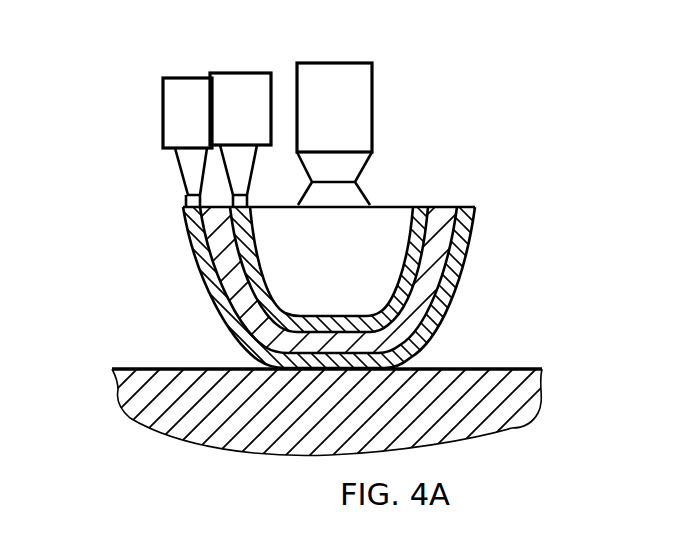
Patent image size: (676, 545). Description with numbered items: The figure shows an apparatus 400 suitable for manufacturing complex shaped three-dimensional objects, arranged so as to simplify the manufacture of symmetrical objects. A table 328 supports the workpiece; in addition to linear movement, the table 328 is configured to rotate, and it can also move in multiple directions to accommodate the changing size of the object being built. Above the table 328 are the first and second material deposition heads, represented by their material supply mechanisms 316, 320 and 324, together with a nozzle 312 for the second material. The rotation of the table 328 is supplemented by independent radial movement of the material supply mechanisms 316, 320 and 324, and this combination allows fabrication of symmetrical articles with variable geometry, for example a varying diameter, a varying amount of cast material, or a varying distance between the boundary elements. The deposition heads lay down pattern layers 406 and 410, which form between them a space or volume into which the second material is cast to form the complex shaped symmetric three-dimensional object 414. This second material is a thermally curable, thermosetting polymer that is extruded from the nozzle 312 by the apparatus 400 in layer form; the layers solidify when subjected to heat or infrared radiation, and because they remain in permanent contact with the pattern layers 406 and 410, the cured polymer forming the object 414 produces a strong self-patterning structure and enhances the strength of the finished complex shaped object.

The apparatus 400 is at (99, 196).
The material supply mechanism 316 is at (172, 95).
The material supply mechanism 320 is at (233, 82).
The material supply mechanism 324 is at (332, 70).
The nozzle 312 is at (320, 182).
The pattern layer 406 is at (422, 207).
The pattern layer 410 is at (453, 290).
The complex shaped symmetric 3D object 414 is at (232, 296).
The table 328 is at (124, 403).